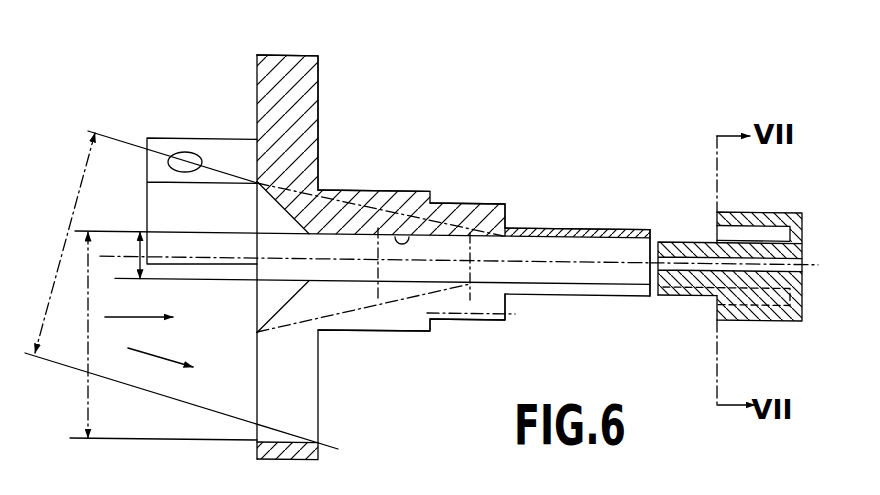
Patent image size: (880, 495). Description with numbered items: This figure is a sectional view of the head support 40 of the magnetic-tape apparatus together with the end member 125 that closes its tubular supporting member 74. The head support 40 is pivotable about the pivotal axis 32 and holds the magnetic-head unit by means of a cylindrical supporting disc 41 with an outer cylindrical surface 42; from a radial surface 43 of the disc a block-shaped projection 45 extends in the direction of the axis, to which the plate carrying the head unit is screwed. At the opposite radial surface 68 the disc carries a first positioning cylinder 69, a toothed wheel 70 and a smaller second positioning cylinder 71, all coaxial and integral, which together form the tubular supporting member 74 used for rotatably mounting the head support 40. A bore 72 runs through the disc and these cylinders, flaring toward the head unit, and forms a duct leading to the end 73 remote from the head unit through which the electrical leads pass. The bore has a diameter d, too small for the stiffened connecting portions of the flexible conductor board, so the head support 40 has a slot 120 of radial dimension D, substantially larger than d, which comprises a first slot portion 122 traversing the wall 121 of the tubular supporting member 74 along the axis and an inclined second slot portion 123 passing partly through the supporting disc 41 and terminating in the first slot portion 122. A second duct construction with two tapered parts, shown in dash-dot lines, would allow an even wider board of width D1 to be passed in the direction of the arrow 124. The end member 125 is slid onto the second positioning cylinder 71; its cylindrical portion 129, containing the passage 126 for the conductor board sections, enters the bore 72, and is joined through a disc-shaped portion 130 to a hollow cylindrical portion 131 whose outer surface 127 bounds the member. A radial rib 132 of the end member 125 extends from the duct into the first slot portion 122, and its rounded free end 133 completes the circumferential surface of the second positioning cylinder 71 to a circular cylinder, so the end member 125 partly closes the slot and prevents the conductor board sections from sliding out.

The head support 40 is at (248, 90).
The supporting disc 41 is at (303, 80).
The outer cylindrical surface 42 is at (287, 55).
The radial surface 43 is at (257, 122).
The block-shaped projection 45 is at (192, 147).
The radial surface 68 is at (320, 145).
The first positioning cylinder 69 is at (383, 200).
The toothed wheel 70 is at (470, 203).
The second positioning cylinder 71 is at (577, 228).
The bore 72 is at (405, 232).
The end 73 is at (656, 232).
The tubular supporting member 74 is at (450, 190).
The slot 120 is at (405, 330).
The wall 121 is at (508, 222).
The first slot portion 122 is at (478, 298).
The second slot portion 123 is at (305, 400).
The arrow 124 is at (155, 358).
The end member 125 is at (806, 216).
The passage 126 is at (804, 264).
The outer surface 127 is at (747, 322).
The cylindrical portion 129 is at (683, 245).
The disc-shaped portion 130 is at (805, 281).
The hollow cylindrical portion 131 is at (747, 213).
The rib 132 is at (688, 298).
The rounded free end 133 is at (706, 298).
The pivotal axis 32 is at (600, 265).
The width value D1 is at (63, 243).
The radial dimension D is at (77, 335).
The diameter d is at (129, 255).